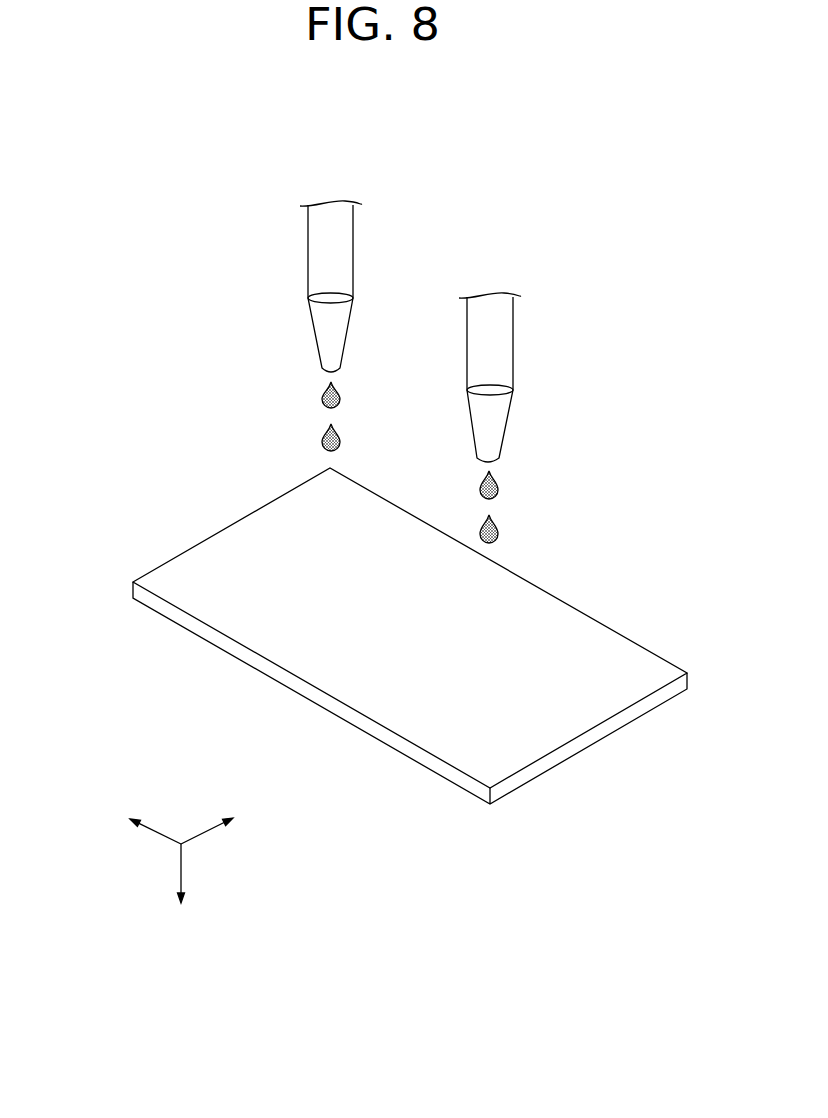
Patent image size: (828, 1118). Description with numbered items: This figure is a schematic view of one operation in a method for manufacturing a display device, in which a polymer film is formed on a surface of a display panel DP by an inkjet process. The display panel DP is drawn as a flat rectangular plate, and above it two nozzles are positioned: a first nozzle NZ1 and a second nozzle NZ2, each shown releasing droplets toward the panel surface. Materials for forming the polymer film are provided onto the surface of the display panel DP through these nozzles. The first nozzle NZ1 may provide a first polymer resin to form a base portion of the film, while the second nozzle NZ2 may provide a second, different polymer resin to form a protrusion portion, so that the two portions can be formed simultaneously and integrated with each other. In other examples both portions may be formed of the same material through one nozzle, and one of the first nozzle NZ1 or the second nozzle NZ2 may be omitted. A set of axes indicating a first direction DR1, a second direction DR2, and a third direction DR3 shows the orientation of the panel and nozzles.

The first nozzle NZ1 is at (343, 250).
The second nozzle NZ2 is at (500, 341).
The display panel DP is at (132, 592).
The first direction DR1 is at (228, 825).
The second direction DR2 is at (134, 825).
The third direction DR3 is at (182, 886).